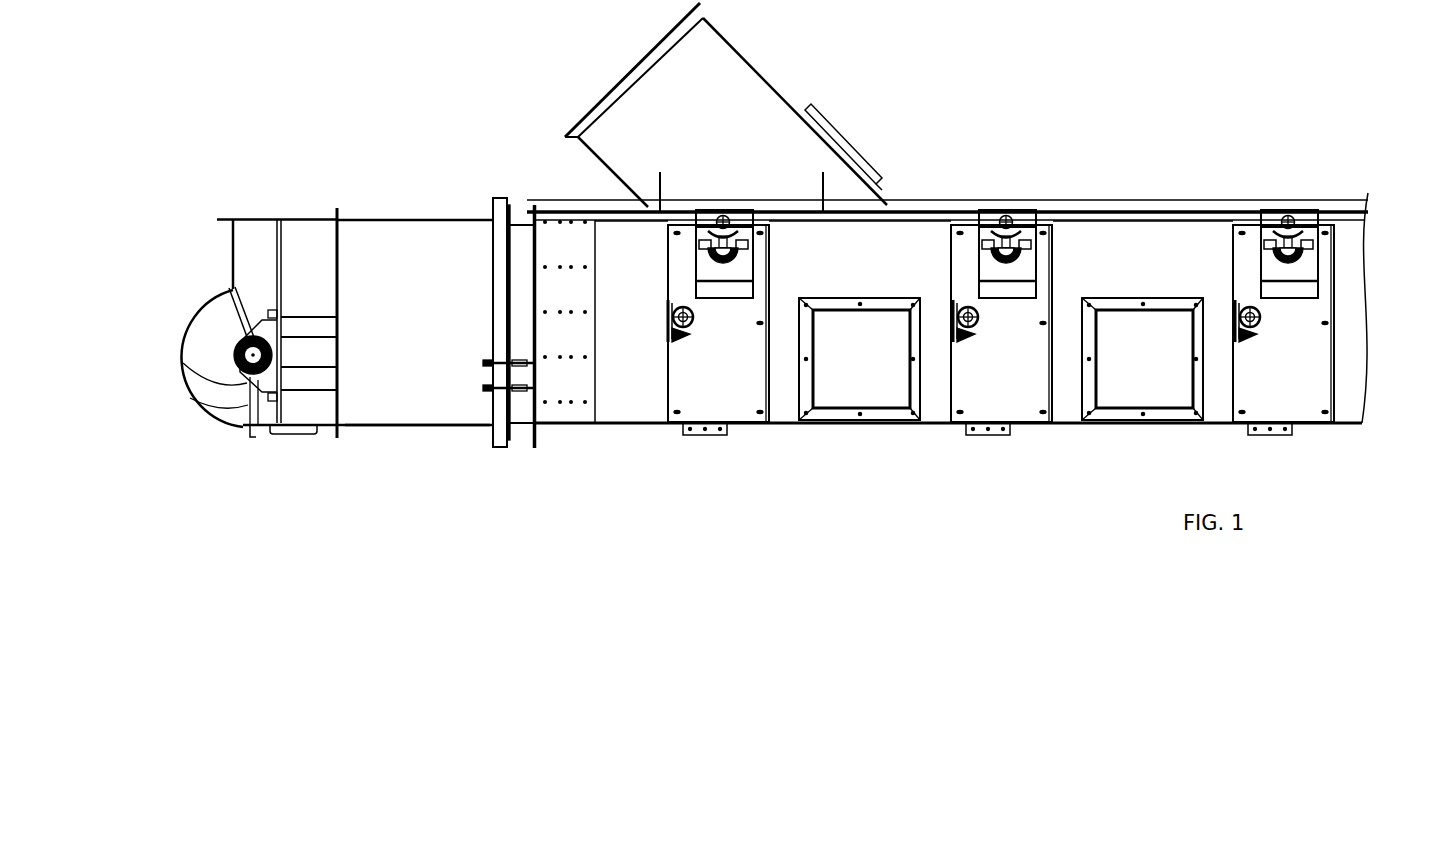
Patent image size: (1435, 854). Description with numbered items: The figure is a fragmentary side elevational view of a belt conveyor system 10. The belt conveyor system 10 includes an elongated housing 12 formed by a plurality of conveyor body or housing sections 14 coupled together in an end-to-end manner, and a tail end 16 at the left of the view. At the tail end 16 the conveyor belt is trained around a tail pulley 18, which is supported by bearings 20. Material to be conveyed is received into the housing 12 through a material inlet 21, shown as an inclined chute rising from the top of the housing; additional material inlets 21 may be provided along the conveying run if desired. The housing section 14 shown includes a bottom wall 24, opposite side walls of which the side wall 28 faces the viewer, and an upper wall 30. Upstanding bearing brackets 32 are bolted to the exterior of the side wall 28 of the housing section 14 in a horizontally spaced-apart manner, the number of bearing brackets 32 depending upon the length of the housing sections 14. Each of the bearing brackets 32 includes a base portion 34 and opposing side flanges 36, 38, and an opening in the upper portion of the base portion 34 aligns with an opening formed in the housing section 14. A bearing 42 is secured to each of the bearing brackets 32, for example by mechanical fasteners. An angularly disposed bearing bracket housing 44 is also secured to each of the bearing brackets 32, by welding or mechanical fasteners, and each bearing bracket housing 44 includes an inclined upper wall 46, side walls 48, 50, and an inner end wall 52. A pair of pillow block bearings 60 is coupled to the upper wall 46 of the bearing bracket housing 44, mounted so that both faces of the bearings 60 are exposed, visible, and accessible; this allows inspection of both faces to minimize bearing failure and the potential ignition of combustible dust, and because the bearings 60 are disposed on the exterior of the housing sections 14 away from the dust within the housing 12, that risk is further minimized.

The belt conveyor system 10 is at (243, 59).
The elongated housing 12 is at (415, 324).
The housing section 14 is at (1158, 200).
The tail end 16 is at (258, 218).
The tail pulley 18 is at (217, 403).
The bearings 20 is at (237, 371).
The material inlet 21 is at (640, 60).
The bottom wall 24 is at (410, 427).
The side wall 28 is at (432, 337).
The upper wall 30 is at (518, 218).
The bearing bracket 32 is at (658, 241).
The base portion 34 is at (1001, 359).
The side flange 36 is at (668, 380).
The side flange 38 is at (780, 390).
The bearing 42 is at (697, 320).
The bearing bracket housing 44 is at (727, 200).
The inclined upper wall 46 is at (745, 228).
The side wall 48 is at (696, 279).
The side wall 50 is at (757, 258).
The inner end wall 52 is at (742, 270).
The pillow block bearings 60 is at (737, 276).